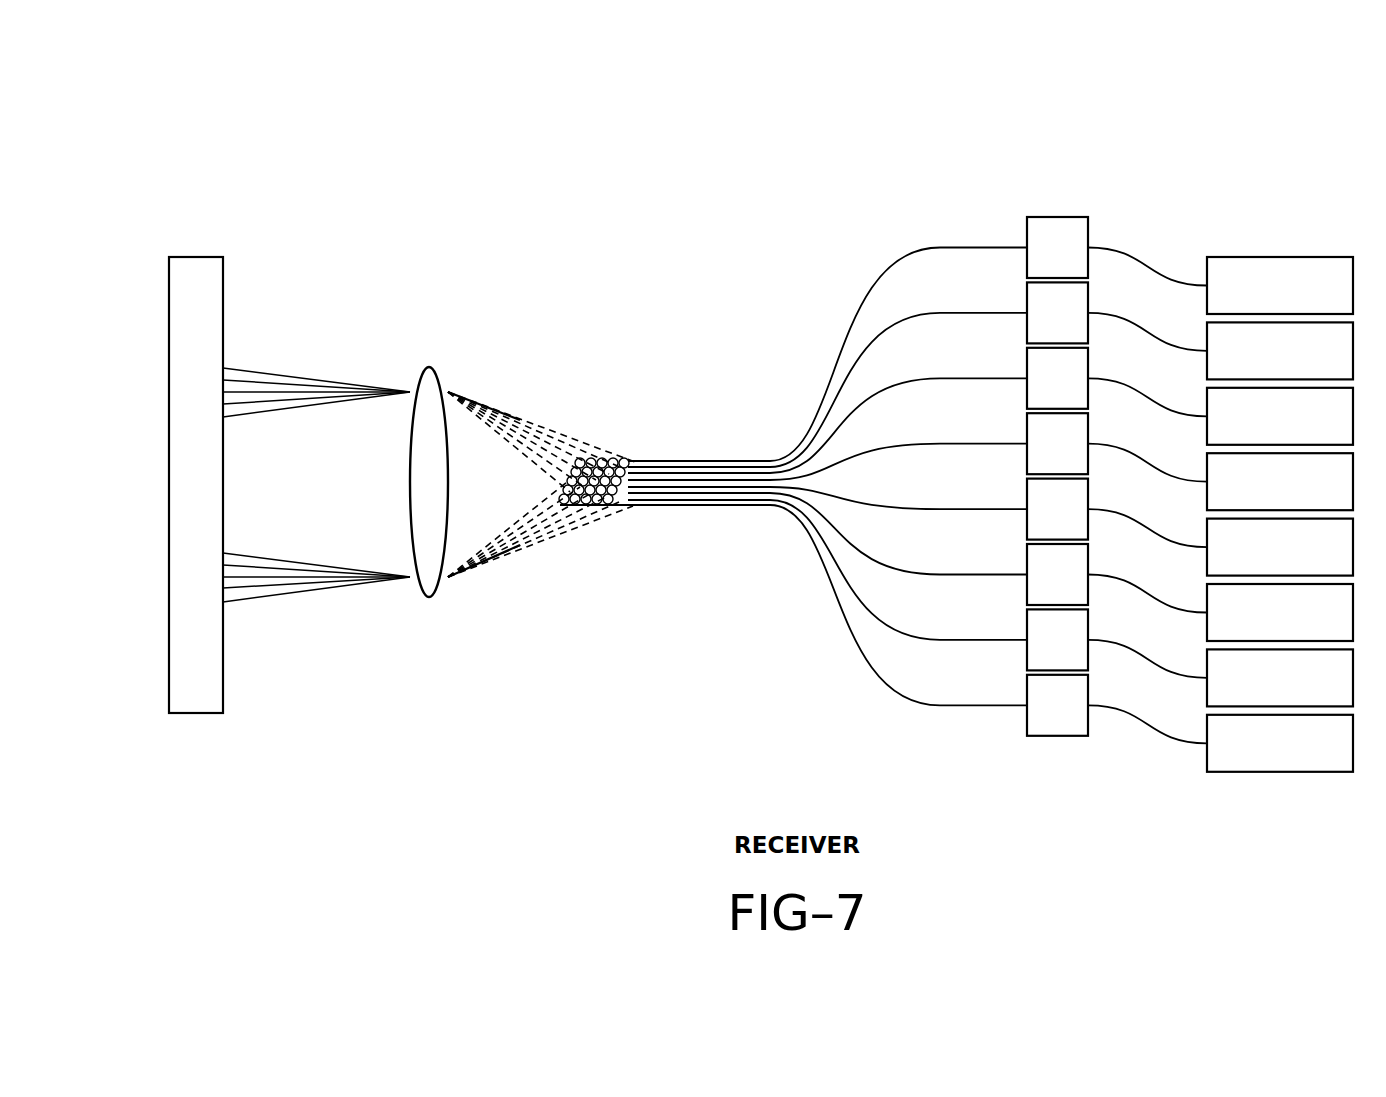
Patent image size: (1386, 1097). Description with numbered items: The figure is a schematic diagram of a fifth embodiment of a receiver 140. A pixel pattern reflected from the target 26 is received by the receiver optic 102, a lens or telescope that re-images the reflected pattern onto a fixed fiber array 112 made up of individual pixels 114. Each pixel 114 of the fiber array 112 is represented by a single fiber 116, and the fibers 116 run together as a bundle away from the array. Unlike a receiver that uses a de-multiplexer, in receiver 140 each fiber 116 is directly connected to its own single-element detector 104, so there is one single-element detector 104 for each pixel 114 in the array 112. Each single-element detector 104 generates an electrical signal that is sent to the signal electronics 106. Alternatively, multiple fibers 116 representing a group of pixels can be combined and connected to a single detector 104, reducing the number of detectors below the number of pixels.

The target 26 is at (181, 498).
The receiver optic 102 is at (452, 375).
The single-element detector 104 is at (1037, 262).
The signal electronics 106 is at (1260, 300).
The fiber array 112 is at (793, 477).
The pixel 114 is at (606, 462).
The fiber 116 is at (716, 506).
The receiver 140 is at (1180, 193).